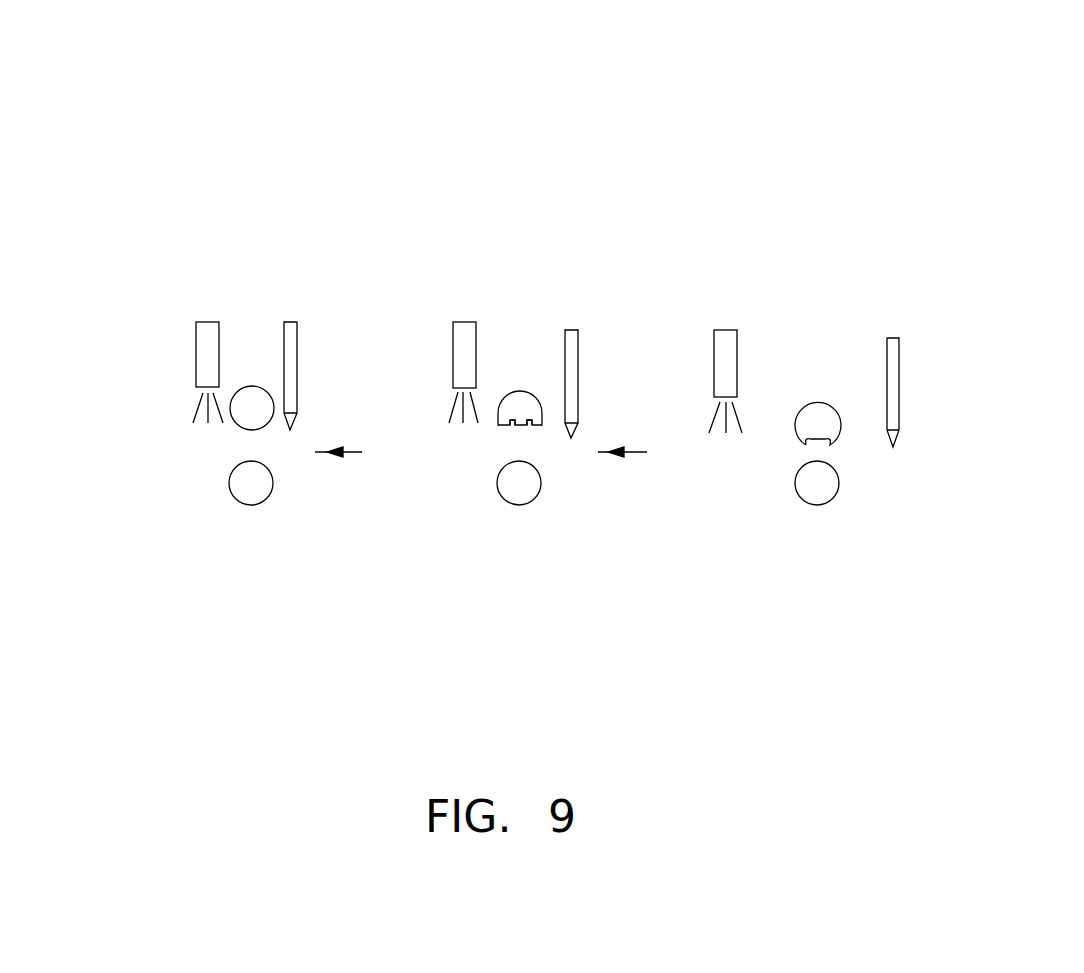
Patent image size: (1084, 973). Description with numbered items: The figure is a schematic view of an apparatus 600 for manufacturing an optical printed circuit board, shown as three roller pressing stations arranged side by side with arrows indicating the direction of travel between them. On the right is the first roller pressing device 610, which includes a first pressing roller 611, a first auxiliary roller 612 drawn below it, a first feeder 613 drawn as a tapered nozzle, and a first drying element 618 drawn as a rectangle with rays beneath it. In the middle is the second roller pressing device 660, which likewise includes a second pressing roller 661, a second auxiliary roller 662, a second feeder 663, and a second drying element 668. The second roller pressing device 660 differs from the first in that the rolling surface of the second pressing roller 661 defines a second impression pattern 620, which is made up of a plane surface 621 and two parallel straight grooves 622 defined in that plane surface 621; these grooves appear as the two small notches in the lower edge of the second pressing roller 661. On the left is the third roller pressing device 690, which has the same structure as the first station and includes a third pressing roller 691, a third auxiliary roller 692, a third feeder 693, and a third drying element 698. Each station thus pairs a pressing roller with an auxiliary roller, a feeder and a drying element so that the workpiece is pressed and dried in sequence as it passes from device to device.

The apparatus 600 is at (538, 102).
The third roller pressing device 690 is at (220, 223).
The third drying element 698 is at (207, 337).
The third pressing roller 691 is at (252, 400).
The third feeder 693 is at (282, 322).
The third auxiliary roller 692 is at (248, 485).
The second roller pressing device 660 is at (652, 240).
The second drying element 668 is at (463, 335).
The second pressing roller 661 is at (520, 408).
The second auxiliary roller 662 is at (518, 488).
The second feeder 663 is at (573, 332).
The second impression pattern 620 is at (380, 468).
The straight grooves 622 is at (510, 428).
The plane surface 621 is at (518, 428).
The first roller pressing device 610 is at (917, 270).
The first drying element 618 is at (727, 343).
The first pressing roller 611 is at (817, 412).
The first auxiliary roller 612 is at (813, 460).
The first feeder 613 is at (892, 343).